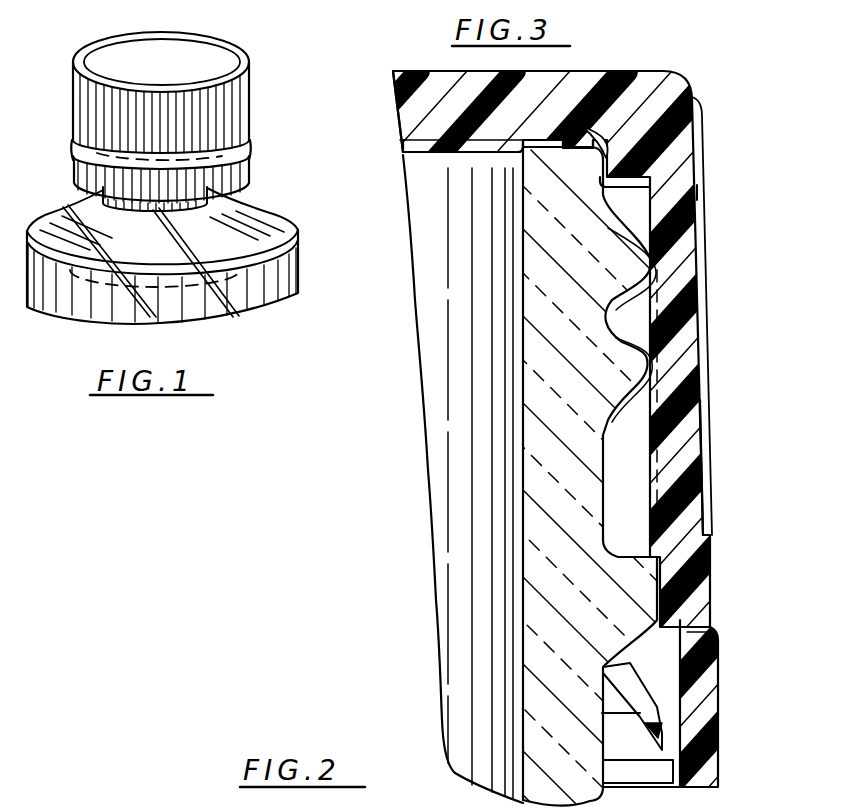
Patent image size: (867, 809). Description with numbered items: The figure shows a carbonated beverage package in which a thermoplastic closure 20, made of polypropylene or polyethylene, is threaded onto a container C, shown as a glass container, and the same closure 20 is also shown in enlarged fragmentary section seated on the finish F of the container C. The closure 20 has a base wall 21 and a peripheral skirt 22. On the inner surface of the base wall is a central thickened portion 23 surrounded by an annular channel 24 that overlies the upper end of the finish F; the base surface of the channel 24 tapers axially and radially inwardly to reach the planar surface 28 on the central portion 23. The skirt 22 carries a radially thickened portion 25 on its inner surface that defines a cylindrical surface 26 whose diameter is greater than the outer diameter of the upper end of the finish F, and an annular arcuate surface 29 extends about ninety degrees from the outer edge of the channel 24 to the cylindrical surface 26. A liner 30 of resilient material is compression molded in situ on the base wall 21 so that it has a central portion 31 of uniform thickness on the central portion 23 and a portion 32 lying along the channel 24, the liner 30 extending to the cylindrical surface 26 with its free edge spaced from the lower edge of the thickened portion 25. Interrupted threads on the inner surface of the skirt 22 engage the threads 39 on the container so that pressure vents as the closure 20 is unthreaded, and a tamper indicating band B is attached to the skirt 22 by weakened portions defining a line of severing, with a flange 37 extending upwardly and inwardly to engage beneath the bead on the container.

In FIG. 1, the plastic closure 20 is at (235, 42).
In FIG. 3, the plastic closure 20 is at (621, 70).
In FIG. 2, the plastic closure 20 is at (138, 808).
In FIG. 3, the base wall 21 is at (402, 77).
In FIG. 2, the base wall 21 is at (60, 808).
In FIG. 3, the peripheral skirt 22 is at (687, 452).
In FIG. 3, the central thickened portion 23 is at (427, 119).
In FIG. 3, the annular channel 24 is at (530, 127).
In FIG. 3, the radially thickened portion 25 is at (680, 153).
In FIG. 3, the cylindrical surface 26 is at (693, 192).
In FIG. 3, the planar surface 28 is at (415, 147).
In FIG. 3, the annular arcuate surface 29 is at (608, 133).
In FIG. 3, the liner 30 is at (449, 155).
In FIG. 3, the central portion of liner 31 is at (424, 152).
In FIG. 3, the channel portion of liner 32 is at (565, 135).
In FIG. 2, the channel portion of liner 32 is at (113, 794).
In FIG. 3, the thread of skirt 37 is at (617, 417).
In FIG. 3, the threads 39 is at (640, 362).
In FIG. 3, the finish F is at (520, 235).
In FIG. 3, the tamper indicating band B is at (703, 717).
In FIG. 1, the container C is at (267, 221).